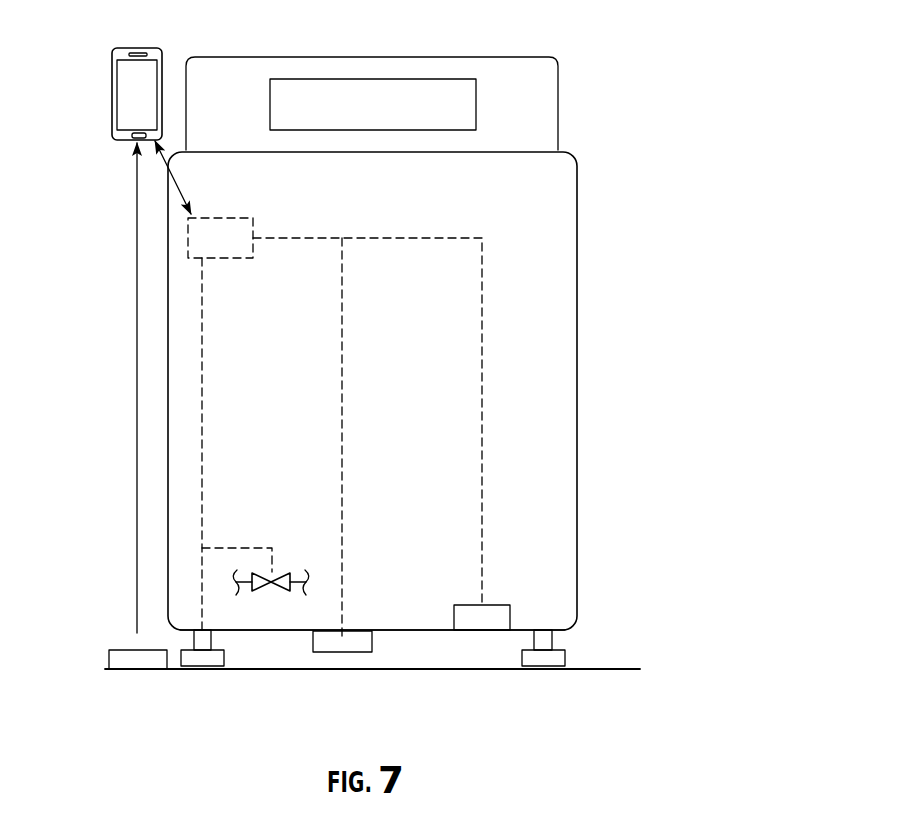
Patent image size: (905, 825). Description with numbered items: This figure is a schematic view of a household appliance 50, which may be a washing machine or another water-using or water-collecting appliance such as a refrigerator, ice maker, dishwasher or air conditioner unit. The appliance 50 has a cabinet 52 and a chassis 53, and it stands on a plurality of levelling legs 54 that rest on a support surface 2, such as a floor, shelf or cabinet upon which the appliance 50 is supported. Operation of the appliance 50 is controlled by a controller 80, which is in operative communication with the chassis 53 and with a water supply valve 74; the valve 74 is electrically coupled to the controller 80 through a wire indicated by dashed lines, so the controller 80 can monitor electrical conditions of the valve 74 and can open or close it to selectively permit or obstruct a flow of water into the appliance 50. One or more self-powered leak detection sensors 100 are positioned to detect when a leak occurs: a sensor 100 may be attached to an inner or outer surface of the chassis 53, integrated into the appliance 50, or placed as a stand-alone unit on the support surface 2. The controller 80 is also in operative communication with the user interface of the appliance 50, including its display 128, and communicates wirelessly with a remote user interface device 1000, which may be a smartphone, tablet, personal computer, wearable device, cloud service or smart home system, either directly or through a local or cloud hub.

The support surface 2 is at (459, 673).
The household appliance 50 is at (397, 326).
The cabinet 52 is at (579, 211).
The chassis 53 is at (403, 630).
The levelling legs 54 is at (224, 658).
The water supply valve 74 is at (281, 575).
The controller 80 is at (226, 217).
The self-powered leak detection sensor 100 is at (493, 603).
The display 128 is at (396, 77).
The remote user interface device 1000 is at (128, 47).